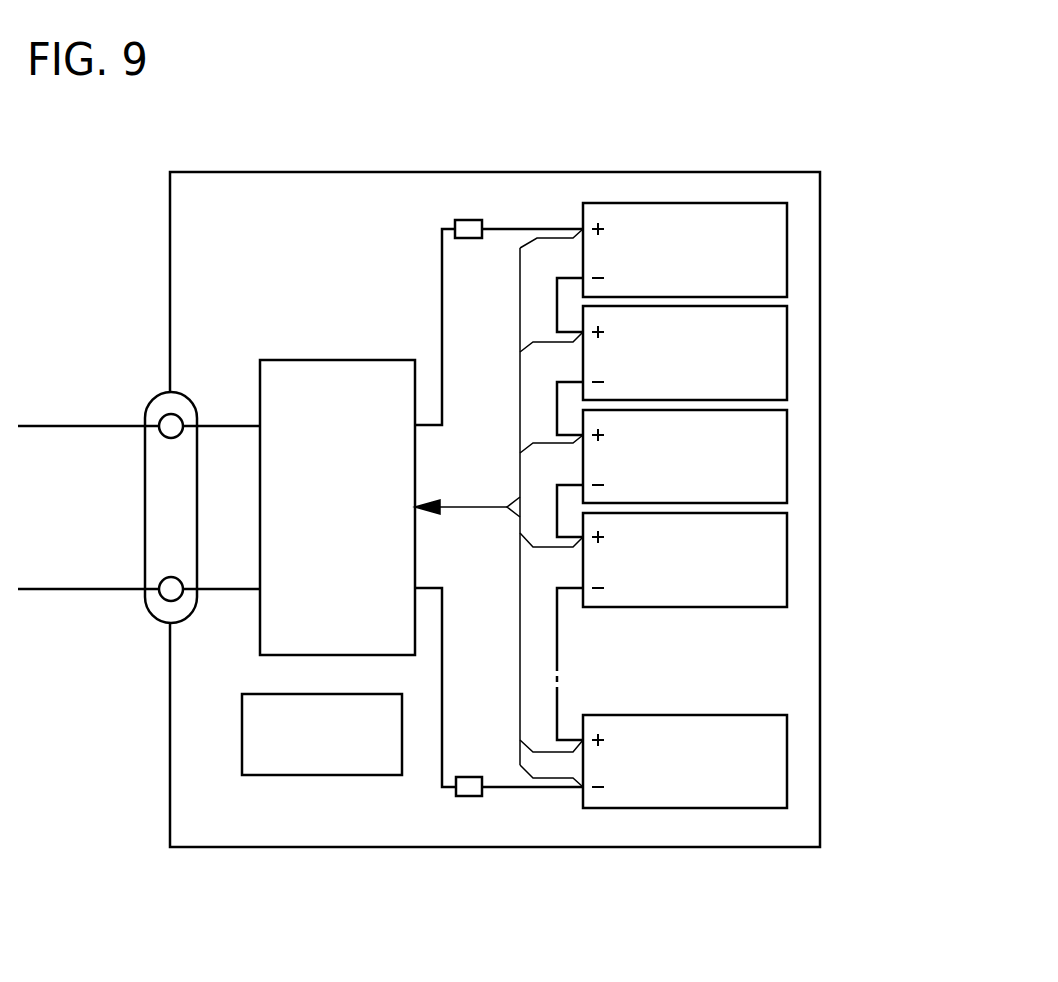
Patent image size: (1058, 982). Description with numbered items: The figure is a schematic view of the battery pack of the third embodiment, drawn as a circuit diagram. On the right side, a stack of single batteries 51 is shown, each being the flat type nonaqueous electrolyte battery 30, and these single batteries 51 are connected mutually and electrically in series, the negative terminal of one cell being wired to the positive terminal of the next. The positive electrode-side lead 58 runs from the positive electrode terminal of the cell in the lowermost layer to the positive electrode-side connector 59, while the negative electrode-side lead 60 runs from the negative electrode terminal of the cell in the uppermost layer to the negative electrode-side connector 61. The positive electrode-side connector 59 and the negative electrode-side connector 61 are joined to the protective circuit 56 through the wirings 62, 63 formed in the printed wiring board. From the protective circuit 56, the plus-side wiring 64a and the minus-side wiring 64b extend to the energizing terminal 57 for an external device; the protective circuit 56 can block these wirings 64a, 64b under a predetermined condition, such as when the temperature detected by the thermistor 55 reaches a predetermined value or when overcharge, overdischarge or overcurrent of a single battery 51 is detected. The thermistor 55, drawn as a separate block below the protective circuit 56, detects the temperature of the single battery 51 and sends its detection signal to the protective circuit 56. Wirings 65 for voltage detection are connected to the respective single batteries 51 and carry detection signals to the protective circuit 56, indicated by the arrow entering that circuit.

The flat type nonaqueous electrolyte battery 30 is at (745, 505).
The single battery 51 is at (787, 257).
The thermistor 55 is at (310, 777).
The protective circuit 56 is at (335, 359).
The energizing terminal 57 is at (145, 416).
The positive electrode-side lead 58 is at (505, 228).
The positive electrode-side connector 59 is at (455, 221).
The negative electrode-side lead 60 is at (500, 789).
The negative electrode-side connector 61 is at (467, 797).
The wiring 62 is at (442, 295).
The wiring 63 is at (443, 720).
The plus-side wiring 64a is at (222, 424).
The minus-side wiring 64b is at (222, 592).
The wiring for voltage detection 65 is at (476, 505).